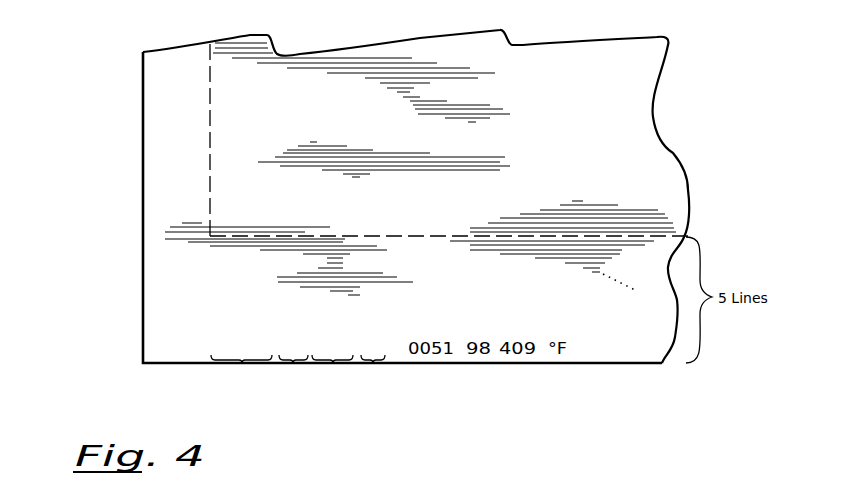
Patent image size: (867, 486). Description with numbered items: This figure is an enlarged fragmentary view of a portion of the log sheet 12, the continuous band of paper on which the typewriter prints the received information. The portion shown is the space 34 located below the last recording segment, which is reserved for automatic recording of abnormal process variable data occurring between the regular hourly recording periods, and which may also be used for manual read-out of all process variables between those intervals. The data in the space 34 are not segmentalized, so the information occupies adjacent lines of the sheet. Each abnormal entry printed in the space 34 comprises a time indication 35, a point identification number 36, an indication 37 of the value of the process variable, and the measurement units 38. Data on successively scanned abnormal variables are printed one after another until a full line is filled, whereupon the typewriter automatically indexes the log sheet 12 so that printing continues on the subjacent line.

The log sheet 12 is at (141, 148).
The space 34 is at (247, 278).
The time indication 35 is at (242, 363).
The point identification number 36 is at (293, 363).
The indication of the value of the process variable 37 is at (333, 363).
The measurement units 38 is at (373, 363).